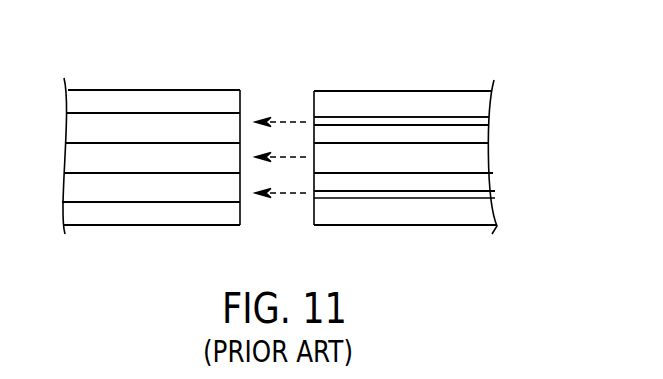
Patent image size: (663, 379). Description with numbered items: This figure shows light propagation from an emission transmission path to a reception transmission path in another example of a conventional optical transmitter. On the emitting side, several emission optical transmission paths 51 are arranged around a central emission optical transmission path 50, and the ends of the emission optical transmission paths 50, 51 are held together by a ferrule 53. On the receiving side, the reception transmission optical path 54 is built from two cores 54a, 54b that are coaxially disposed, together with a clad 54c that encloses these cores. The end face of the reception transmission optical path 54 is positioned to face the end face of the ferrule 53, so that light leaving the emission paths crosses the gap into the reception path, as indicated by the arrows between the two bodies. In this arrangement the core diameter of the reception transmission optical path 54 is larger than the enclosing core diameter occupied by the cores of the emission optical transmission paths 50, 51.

The emission optical transmission path 50 is at (405, 138).
The emission optical transmission paths 51 is at (347, 120).
The ferrule 53 is at (450, 91).
The reception transmission optical path 54 is at (156, 152).
The core 54a is at (206, 158).
The core 54b is at (163, 135).
The clad 54c is at (206, 210).